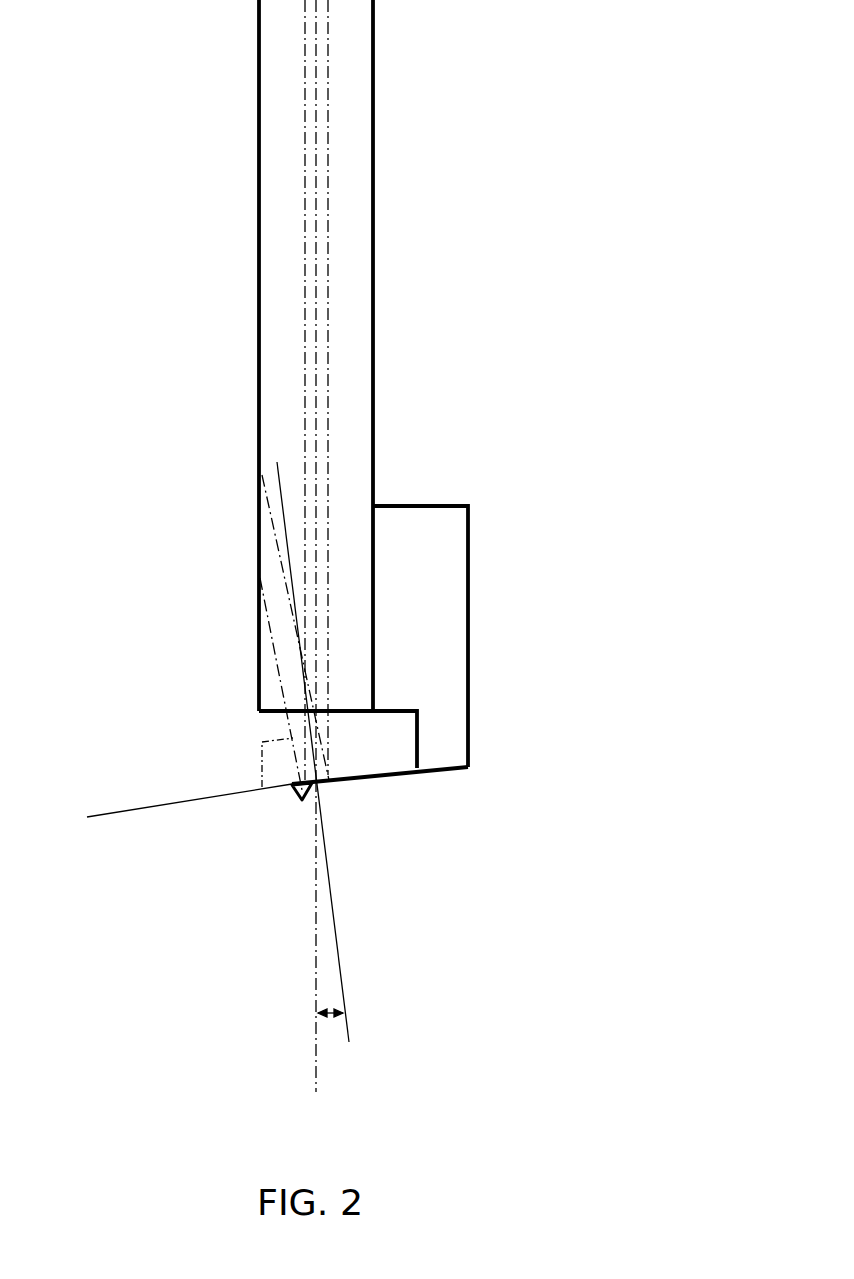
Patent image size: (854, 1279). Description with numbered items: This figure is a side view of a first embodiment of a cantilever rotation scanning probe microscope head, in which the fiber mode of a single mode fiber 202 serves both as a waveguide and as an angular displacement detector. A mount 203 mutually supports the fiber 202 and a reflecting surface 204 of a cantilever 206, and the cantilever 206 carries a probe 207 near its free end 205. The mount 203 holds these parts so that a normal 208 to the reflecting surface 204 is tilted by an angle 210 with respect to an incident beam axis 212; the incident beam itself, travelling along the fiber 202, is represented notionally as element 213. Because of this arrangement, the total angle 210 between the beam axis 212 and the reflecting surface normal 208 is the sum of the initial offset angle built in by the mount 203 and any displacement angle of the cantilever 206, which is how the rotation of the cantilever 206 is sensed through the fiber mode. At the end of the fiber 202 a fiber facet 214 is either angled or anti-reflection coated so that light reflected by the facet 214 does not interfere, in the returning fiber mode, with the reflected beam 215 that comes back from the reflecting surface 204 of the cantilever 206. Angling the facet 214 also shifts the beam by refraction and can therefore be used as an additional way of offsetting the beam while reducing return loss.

The single mode fiber 202 is at (352, 123).
The mount 203 is at (437, 623).
The reflecting surface 204 is at (327, 777).
The free end 205 is at (292, 786).
The cantilever 206 is at (370, 777).
The probe 207 is at (301, 804).
The normal 208 is at (340, 948).
The angle 210 is at (330, 1020).
The incident beam axis 212 is at (313, 923).
The incident beam 213 is at (330, 363).
The fiber facet 214 is at (272, 716).
The reflected beam 215 is at (260, 630).